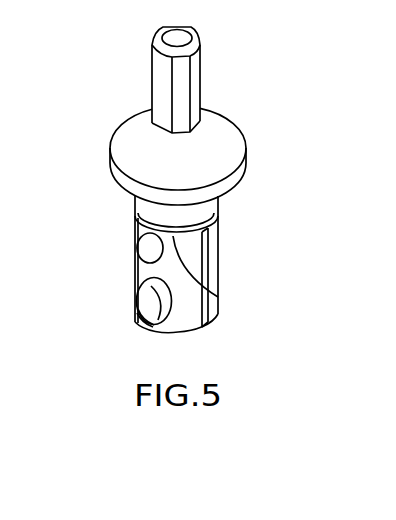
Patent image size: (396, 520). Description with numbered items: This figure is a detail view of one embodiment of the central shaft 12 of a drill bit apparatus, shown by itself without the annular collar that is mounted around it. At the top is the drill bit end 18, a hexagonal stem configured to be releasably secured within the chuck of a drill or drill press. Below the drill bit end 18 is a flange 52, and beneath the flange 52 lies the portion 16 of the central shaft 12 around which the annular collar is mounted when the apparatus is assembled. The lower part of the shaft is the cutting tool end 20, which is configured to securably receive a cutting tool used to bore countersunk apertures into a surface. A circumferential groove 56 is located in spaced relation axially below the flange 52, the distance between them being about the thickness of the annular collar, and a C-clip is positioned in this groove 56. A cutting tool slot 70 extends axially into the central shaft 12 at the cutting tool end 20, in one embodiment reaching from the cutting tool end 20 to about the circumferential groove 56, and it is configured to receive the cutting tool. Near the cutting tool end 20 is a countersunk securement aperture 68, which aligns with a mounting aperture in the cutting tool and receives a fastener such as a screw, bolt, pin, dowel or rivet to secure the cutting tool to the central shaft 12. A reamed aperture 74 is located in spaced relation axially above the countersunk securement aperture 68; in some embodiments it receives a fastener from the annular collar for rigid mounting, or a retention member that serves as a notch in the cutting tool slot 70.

The central shaft 12 is at (220, 105).
The drill bit end 18 is at (151, 74).
The flange 52 is at (128, 184).
The portion of the central shaft 16 is at (253, 172).
The cutting tool end 20 is at (182, 336).
The cutting tool slot 70 is at (206, 260).
The reamed aperture 74 is at (152, 247).
The countersunk securement aperture 68 is at (149, 301).
The circumferential groove 56 is at (218, 297).